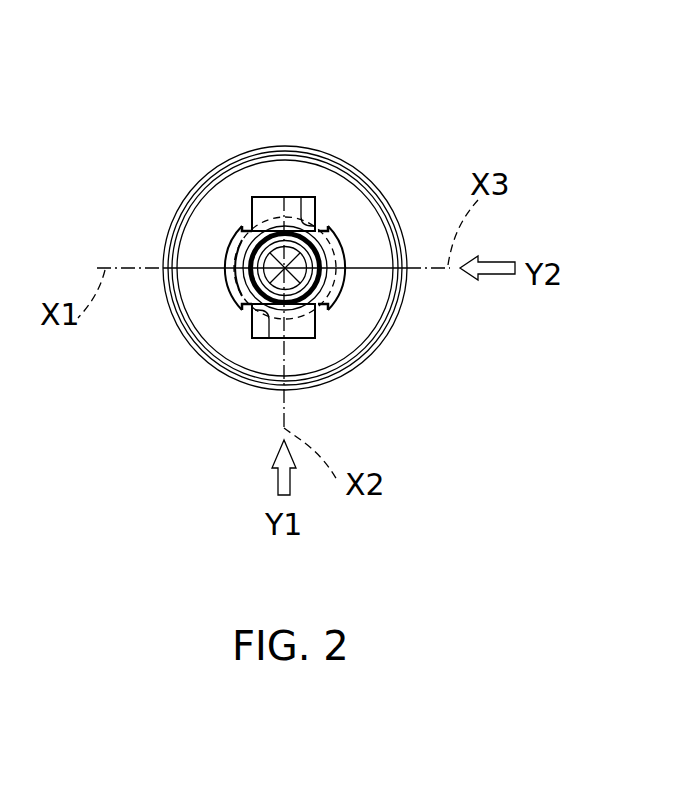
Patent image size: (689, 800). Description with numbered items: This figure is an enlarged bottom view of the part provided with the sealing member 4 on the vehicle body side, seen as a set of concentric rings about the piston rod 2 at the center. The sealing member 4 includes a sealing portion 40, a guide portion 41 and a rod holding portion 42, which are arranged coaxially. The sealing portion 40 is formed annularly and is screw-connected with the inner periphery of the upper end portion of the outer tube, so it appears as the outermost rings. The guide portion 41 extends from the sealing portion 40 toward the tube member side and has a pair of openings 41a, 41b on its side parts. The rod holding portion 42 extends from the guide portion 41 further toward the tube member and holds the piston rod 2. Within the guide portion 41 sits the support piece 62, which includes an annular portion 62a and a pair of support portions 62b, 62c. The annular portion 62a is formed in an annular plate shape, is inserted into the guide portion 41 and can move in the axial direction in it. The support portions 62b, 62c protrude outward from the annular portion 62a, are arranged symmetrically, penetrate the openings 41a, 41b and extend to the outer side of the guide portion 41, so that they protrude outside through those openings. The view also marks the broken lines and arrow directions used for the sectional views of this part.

The sealing member 4 is at (153, 208).
The piston rod 2 is at (338, 228).
The sealing portion 40 is at (380, 337).
The guide portion 41 is at (228, 290).
The opening 41a is at (262, 340).
The opening 41b is at (303, 200).
The rod holding portion 42 is at (232, 225).
The support piece 62 is at (265, 191).
The annular portion 62a is at (333, 283).
The support portion 62b is at (305, 338).
The support portion 62c is at (292, 197).